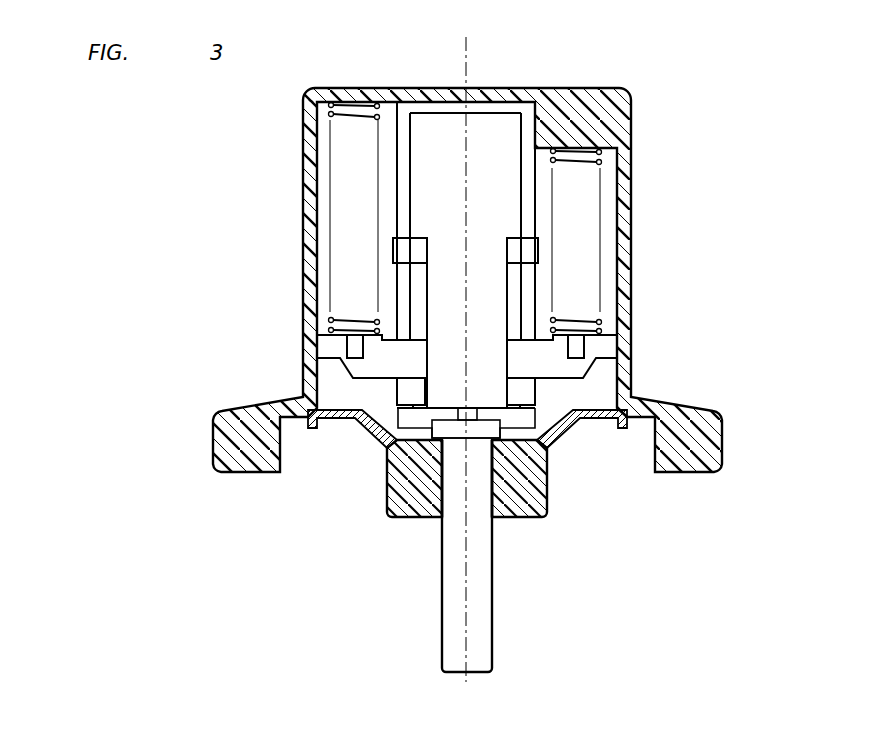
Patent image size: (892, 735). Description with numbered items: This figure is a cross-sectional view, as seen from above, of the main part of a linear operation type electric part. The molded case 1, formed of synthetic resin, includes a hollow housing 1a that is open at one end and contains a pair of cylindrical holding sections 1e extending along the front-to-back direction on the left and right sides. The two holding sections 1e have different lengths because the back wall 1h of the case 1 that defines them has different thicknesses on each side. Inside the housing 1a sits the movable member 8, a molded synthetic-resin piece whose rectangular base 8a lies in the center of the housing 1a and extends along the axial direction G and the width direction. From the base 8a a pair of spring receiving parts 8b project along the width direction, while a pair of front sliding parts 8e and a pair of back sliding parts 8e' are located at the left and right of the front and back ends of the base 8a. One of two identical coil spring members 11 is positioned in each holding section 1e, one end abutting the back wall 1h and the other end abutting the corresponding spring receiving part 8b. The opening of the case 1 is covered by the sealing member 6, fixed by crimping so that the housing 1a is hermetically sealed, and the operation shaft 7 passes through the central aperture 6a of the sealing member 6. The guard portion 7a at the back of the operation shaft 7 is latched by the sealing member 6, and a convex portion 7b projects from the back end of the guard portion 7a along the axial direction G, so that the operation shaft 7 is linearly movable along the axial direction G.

The molded case 1 is at (234, 484).
The hollow housing 1a is at (388, 118).
The cylindrical holding sections 1e is at (322, 252).
The back wall 1h is at (362, 98).
The coil spring members 11 is at (330, 108).
The movable member 8 is at (471, 362).
The rectangular base 8a is at (490, 300).
The spring receiving parts 8b is at (327, 345).
The front sliding parts 8e is at (444, 453).
The back sliding parts 8e' is at (474, 226).
The sealing member 6 is at (395, 522).
The aperture 6a is at (447, 495).
The operation shaft 7 is at (486, 655).
The guard portion 7a is at (440, 428).
The convex portion 7b is at (472, 416).
The axial direction G is at (468, 46).